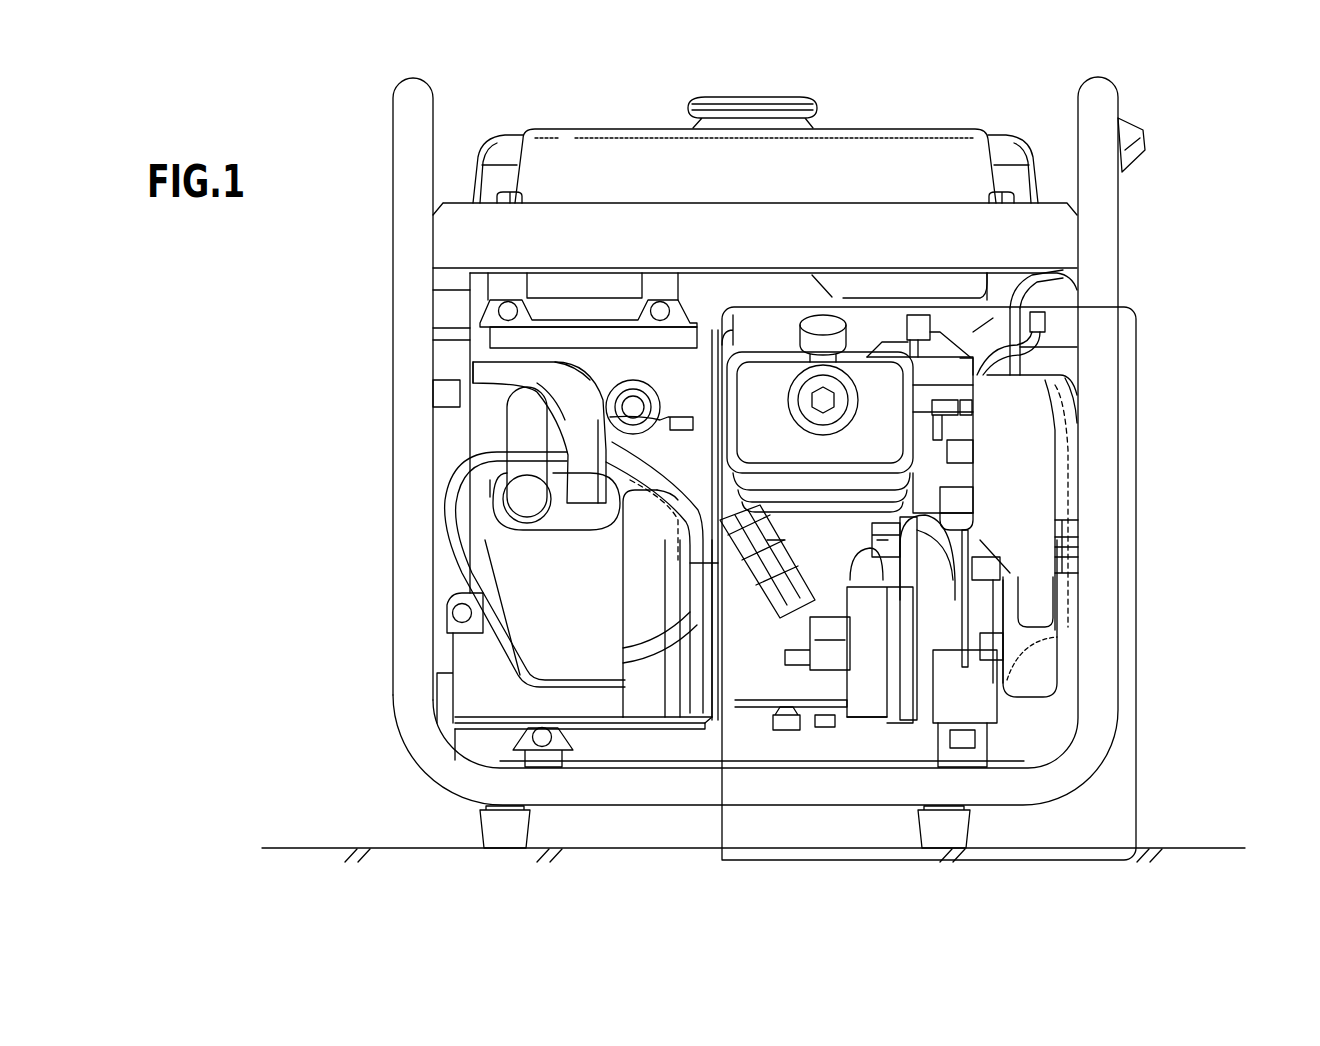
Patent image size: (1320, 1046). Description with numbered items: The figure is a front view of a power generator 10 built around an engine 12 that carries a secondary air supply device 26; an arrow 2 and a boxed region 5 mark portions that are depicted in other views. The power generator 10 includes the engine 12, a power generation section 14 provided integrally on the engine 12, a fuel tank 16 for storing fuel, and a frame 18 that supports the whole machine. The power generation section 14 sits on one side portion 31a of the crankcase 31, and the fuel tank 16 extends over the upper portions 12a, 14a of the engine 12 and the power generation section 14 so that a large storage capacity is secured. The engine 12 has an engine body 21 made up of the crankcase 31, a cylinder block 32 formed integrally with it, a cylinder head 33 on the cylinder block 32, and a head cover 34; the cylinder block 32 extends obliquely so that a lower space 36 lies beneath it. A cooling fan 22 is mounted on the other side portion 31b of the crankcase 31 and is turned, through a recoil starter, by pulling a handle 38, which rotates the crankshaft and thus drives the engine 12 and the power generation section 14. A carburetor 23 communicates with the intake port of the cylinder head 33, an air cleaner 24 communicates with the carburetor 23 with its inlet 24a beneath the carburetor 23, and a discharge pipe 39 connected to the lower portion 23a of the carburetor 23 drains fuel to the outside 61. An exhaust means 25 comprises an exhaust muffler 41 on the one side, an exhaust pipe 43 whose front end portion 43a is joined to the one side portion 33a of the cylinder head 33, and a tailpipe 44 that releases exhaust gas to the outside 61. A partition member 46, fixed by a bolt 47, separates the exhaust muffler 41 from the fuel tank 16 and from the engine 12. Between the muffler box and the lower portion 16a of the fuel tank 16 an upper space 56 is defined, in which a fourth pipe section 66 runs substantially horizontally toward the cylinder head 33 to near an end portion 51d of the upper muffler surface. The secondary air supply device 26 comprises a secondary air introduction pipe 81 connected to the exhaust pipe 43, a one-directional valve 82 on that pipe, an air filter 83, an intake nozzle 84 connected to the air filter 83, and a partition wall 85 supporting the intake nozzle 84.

The power generator 10 is at (350, 140).
The section view direction of FIG. 2 is at (288, 438).
The section view region of FIG. 5 is at (1138, 420).
The engine 12 is at (1080, 380).
The upper portion of the engine 12a is at (755, 395).
The power generation section 14 is at (440, 455).
The upper portion of the power generation section 14a is at (460, 405).
The fuel tank 16 is at (905, 122).
The lower portion of the fuel tank 16a is at (887, 317).
The frame 18 is at (395, 243).
The engine body 21 is at (620, 600).
The cooling fan 22 is at (1070, 455).
The carburetor 23 is at (967, 480).
The lower portion of the carburetor 23a is at (970, 517).
The air cleaner 24 is at (1043, 640).
The inlet of the air cleaner 24a is at (1010, 655).
The exhaust means 25 is at (485, 640).
The secondary air supply device 26 is at (850, 717).
The crankcase 31 is at (712, 683).
The one side portion of the crankcase 31a is at (672, 626).
The other side portion of the crankcase 31b is at (945, 660).
The cylinder block 32 is at (705, 588).
The cylinder head 33 is at (667, 533).
The one side portion of the cylinder head 33a is at (713, 393).
The head cover 34 is at (670, 487).
The lower space 36 is at (858, 565).
The handle of the recoil starter 38 is at (1147, 128).
The discharge pipe 39 is at (970, 603).
The exhaust muffler 41 is at (547, 647).
The exhaust pipe 43 is at (613, 460).
The front end portion of the exhaust pipe 43a is at (727, 400).
The tailpipe 44 is at (527, 430).
The partition member 46 is at (582, 320).
The bolt 47 is at (508, 301).
The end portion of the upper muffler surface portion 51d is at (652, 448).
The upper space 56 is at (590, 426).
The outside 61 is at (561, 593).
The fourth pipe section 66 is at (605, 357).
The secondary air introduction pipe 81 is at (580, 357).
The one-directional valve 82 is at (837, 653).
The air filter 83 is at (873, 710).
The intake nozzle 84 is at (940, 557).
The partition wall 85 is at (917, 540).